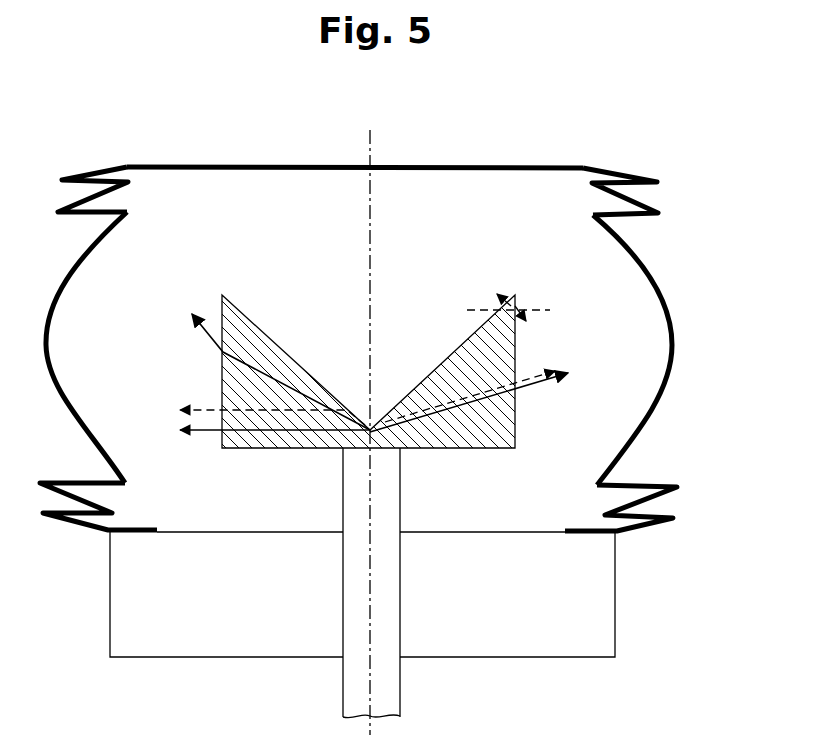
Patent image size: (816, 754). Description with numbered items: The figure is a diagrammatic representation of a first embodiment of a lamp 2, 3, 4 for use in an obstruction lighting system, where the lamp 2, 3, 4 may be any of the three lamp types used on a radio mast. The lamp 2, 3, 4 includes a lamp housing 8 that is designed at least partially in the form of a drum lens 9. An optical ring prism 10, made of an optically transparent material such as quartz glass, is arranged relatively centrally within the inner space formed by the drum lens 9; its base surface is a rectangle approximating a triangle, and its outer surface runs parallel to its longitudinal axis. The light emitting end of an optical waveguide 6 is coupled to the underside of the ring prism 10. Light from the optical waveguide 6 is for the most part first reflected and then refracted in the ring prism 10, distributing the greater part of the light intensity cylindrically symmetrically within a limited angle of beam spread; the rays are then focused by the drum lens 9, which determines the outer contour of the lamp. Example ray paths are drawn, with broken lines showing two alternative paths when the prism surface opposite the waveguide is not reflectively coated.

The drum lens 9 is at (547, 185).
The lamp 2 is at (407, 348).
The lamp 3 is at (407, 348).
The lamp 4 is at (652, 447).
The lamp housing 8 is at (637, 531).
The optical waveguide 6 is at (392, 698).
The optical ring prism 10 is at (445, 358).